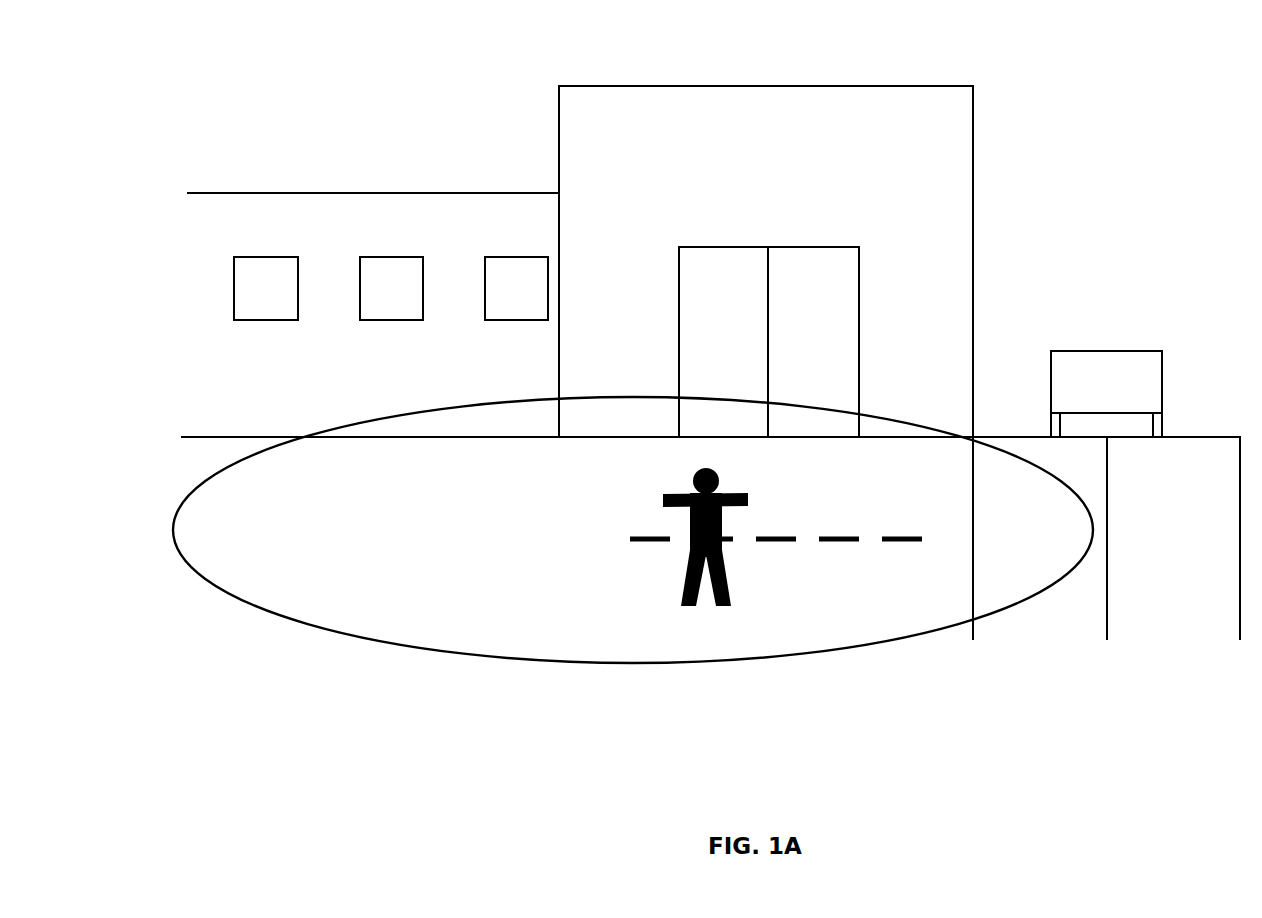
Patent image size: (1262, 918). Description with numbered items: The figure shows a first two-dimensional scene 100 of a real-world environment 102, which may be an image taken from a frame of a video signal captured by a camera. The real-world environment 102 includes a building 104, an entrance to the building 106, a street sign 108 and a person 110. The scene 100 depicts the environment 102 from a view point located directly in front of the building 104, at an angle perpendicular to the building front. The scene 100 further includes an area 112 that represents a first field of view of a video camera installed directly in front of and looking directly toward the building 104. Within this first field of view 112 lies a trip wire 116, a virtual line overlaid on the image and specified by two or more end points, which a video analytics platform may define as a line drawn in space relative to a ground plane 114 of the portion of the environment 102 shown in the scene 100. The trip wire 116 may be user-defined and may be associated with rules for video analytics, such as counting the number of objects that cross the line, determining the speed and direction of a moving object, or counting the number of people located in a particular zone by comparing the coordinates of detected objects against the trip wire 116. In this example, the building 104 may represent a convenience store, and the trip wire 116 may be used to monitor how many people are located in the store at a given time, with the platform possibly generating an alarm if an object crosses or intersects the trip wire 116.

The two-dimensional scene 100 is at (308, 76).
The real-world environment 102 is at (1145, 117).
The building 104 is at (973, 175).
The entrance to the building 106 is at (863, 335).
The street sign 108 is at (1130, 349).
The person 110 is at (737, 493).
The area representing first field of view 112 is at (890, 645).
The ground plane 114 is at (438, 602).
The trip wire 116 is at (643, 536).